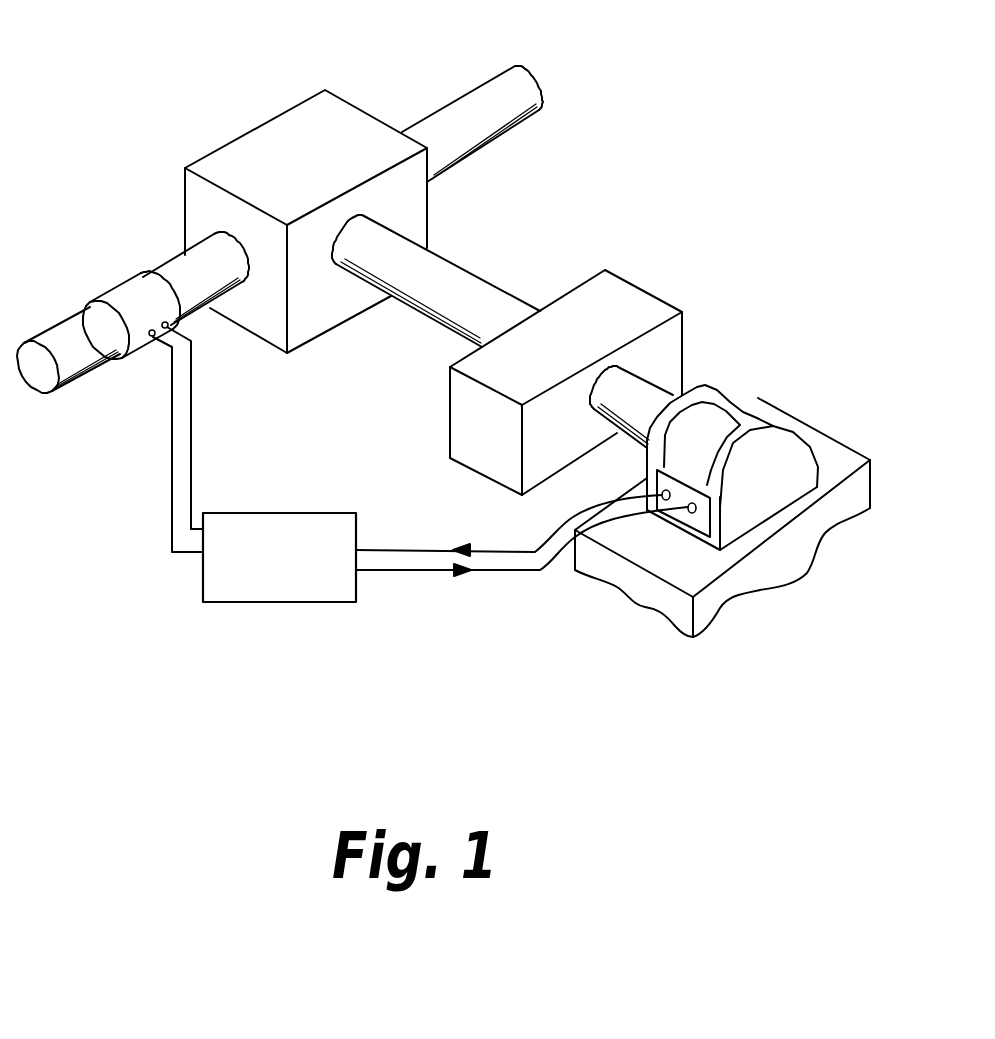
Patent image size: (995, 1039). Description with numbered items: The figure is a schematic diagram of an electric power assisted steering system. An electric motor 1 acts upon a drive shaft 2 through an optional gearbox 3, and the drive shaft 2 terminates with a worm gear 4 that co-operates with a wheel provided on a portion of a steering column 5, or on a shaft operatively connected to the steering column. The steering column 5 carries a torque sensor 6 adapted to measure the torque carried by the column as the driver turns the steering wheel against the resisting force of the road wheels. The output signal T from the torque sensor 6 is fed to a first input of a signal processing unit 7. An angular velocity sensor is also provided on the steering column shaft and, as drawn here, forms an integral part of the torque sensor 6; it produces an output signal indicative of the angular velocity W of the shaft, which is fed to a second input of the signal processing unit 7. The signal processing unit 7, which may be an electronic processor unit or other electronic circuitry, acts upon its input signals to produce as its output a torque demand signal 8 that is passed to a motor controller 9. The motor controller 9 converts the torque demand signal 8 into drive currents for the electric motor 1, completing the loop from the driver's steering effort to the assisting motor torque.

The electric motor 1 is at (778, 463).
The drive shaft 2 is at (448, 283).
The gearbox 3 is at (543, 358).
The worm gear 4 is at (273, 175).
The steering column 5 is at (428, 103).
The torque sensor 6 is at (122, 298).
The signal processing unit 7 is at (272, 572).
The torque demand signal 8 is at (500, 577).
The motor controller 9 is at (702, 522).
The output signal from the torque sensor T is at (174, 444).
The angular velocity signal W is at (197, 428).